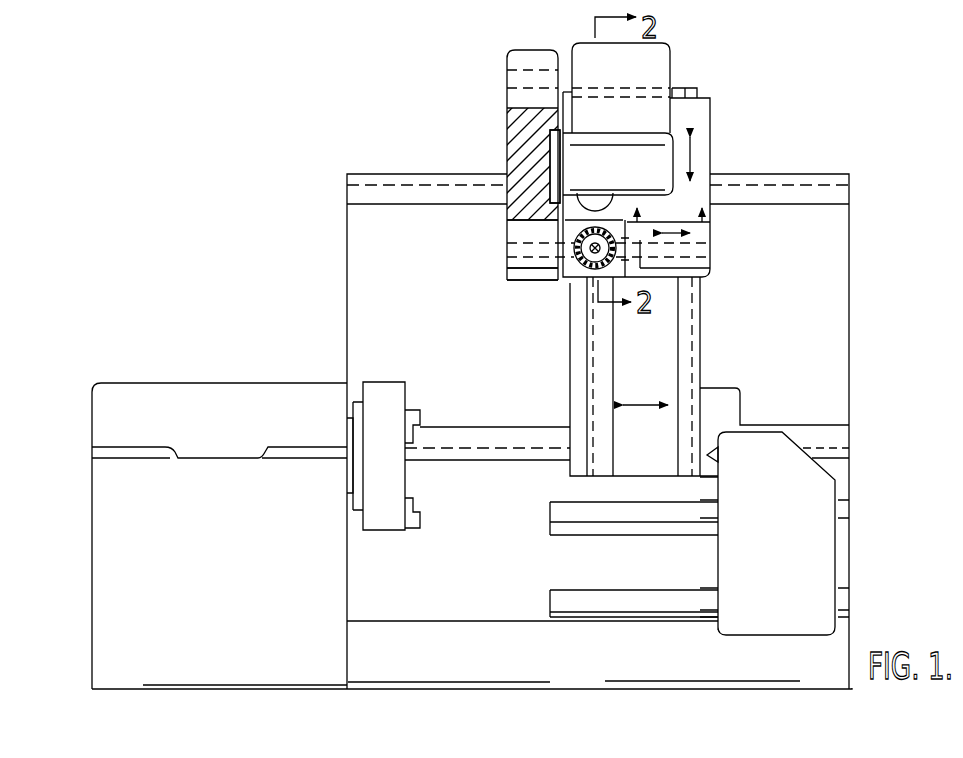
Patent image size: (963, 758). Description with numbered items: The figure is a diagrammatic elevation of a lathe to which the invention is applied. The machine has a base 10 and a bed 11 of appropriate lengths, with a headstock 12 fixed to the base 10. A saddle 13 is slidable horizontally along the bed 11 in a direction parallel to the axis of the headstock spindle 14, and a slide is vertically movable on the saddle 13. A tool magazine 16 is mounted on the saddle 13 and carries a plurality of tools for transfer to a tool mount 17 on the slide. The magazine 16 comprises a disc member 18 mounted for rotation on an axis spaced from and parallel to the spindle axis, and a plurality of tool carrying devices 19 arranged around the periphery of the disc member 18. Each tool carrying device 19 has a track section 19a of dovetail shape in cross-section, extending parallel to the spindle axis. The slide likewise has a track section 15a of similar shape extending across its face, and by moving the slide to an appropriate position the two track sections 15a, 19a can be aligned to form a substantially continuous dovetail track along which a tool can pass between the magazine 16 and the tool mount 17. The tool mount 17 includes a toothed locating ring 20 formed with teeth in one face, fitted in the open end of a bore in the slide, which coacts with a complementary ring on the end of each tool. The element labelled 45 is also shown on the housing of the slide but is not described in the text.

The base 10 is at (365, 649).
The bed 11 is at (822, 352).
The headstock 12 is at (107, 652).
The saddle 13 is at (655, 365).
The headstock spindle 14 is at (350, 482).
The track section 15a is at (538, 313).
The tool magazine 16 is at (517, 137).
The tool mount 17 is at (590, 269).
The disc member 18 is at (535, 195).
The tool carrying devices 19 is at (520, 268).
The track section 19a is at (518, 250).
The ring 20 is at (595, 228).
The housing 45 is at (697, 273).